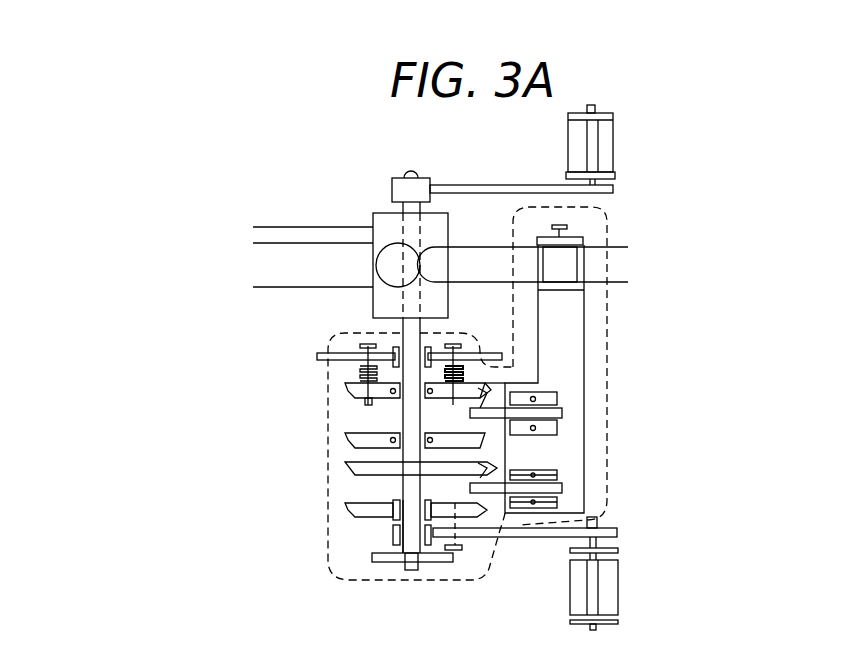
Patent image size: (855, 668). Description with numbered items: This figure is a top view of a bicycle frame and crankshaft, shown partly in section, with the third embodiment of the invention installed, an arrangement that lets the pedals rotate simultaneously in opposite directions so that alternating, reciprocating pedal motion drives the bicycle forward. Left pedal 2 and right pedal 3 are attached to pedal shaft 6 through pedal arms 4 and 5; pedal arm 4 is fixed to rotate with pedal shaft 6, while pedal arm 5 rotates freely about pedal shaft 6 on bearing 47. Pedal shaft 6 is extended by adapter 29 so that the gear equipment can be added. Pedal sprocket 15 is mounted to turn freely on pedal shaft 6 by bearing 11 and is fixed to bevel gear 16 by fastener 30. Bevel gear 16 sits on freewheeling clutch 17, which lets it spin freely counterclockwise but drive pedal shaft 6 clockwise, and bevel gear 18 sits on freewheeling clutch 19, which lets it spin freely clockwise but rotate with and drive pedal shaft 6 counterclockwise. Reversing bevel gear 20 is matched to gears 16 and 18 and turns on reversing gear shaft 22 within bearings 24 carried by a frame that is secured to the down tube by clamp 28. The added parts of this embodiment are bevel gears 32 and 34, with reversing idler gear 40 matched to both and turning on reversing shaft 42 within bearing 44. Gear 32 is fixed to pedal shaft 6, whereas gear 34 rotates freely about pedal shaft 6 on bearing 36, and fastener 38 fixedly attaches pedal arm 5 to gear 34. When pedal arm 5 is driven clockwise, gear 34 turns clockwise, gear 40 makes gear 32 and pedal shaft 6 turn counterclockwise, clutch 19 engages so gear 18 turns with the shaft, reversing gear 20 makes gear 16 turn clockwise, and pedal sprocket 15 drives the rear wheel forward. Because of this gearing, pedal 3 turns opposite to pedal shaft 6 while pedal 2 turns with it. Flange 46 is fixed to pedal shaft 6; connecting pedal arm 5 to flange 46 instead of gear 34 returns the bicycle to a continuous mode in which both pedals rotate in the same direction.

The left pedal 2 is at (615, 140).
The right pedal 3 is at (617, 598).
The pedal arm 4 is at (487, 184).
The pedal arm 5 is at (532, 540).
The pedal shaft 6 is at (393, 196).
The bearing 11 is at (393, 350).
The pedal sprocket 15 is at (322, 360).
The bevel gear 16 is at (343, 392).
The freewheeling clutch 17 is at (368, 406).
The bevel gear 18 is at (345, 440).
The freewheeling clutch 19 is at (348, 468).
The reversing bevel gear 20 is at (488, 420).
The reversing gear shaft 22 is at (565, 440).
The bearings 24 is at (560, 386).
The clamp 28 is at (580, 221).
The adapter 29 is at (400, 336).
The fastener 30 is at (457, 345).
The bevel gear 32 is at (347, 508).
The bevel gear 34 is at (391, 515).
The bearing 36 is at (392, 535).
The fastener 38 is at (458, 551).
The reversing idler gear 40 is at (492, 530).
The reversing shaft 42 is at (590, 495).
The bearing 44 is at (590, 522).
The flange 46 is at (385, 563).
The bearing 47 is at (398, 553).